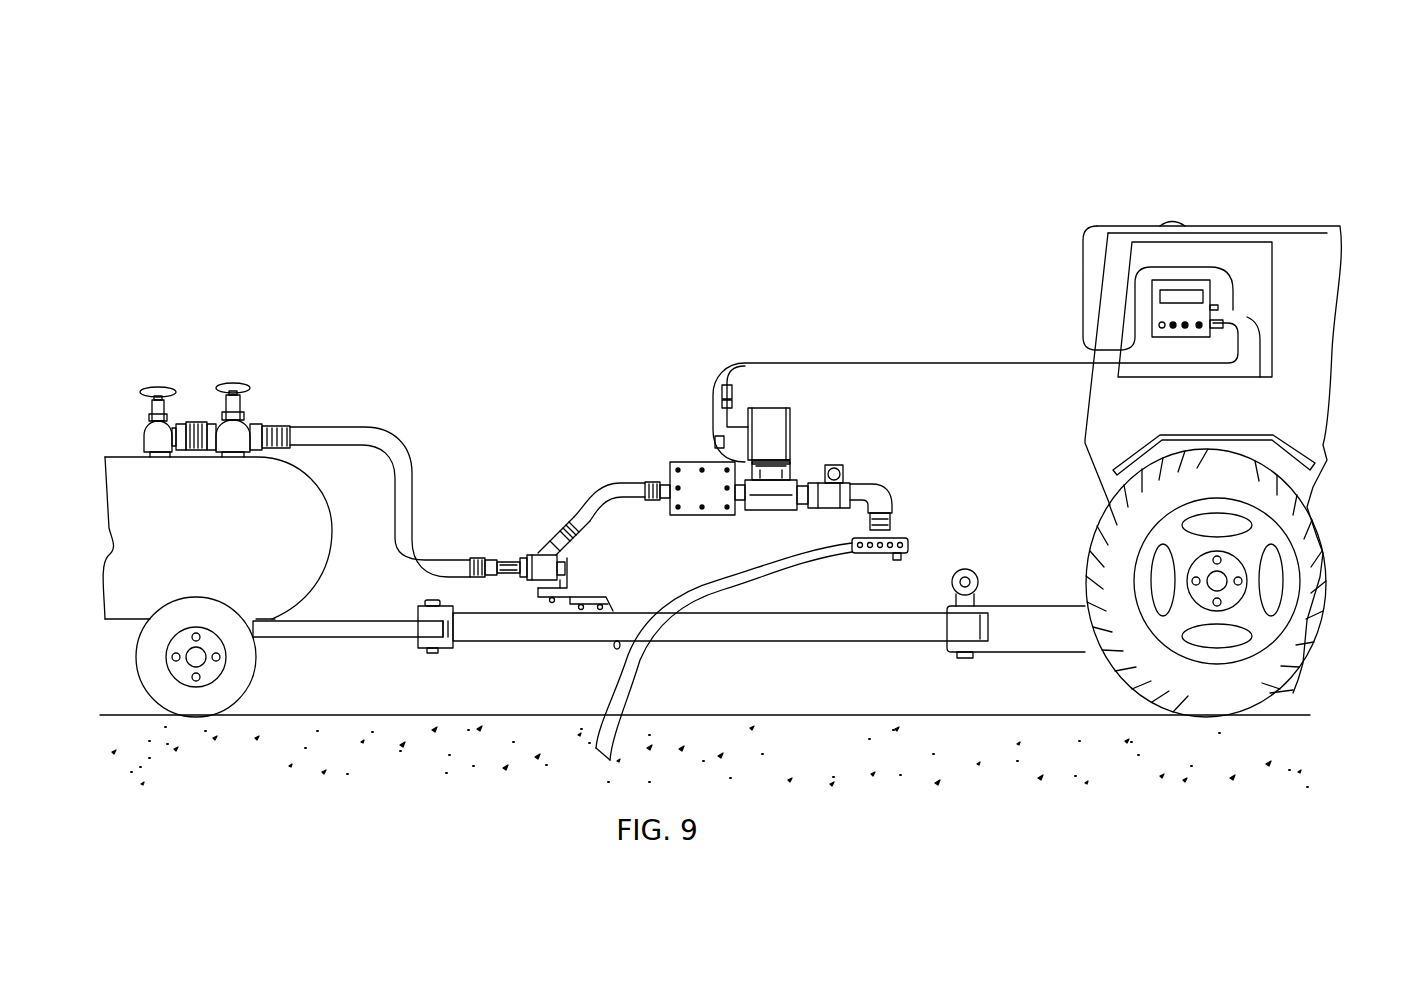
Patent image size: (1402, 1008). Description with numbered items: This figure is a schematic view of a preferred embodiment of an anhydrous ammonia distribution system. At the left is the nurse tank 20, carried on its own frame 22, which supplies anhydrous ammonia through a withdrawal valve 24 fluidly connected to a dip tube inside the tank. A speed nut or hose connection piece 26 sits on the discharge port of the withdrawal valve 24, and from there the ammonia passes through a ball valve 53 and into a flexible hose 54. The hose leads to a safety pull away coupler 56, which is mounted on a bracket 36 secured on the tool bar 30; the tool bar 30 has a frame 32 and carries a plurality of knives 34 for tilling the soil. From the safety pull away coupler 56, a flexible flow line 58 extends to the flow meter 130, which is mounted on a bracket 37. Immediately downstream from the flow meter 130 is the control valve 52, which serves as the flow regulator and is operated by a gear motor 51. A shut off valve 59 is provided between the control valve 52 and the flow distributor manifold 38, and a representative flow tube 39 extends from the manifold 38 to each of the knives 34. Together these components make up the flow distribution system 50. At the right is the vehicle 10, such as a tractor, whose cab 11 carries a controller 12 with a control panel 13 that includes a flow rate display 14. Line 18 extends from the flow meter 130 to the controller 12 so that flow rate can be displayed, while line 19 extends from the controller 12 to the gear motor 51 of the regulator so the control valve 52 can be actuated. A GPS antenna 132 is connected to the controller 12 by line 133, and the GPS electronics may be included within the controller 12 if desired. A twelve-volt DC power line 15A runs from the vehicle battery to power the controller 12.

The vehicle 10 is at (1085, 165).
The cab 11 is at (1100, 407).
The controller 12 is at (1253, 270).
The control panel 13 is at (1160, 312).
The flow rate display 14 is at (1160, 293).
The power line 15A is at (1248, 318).
The line 18 is at (712, 412).
The line 19 is at (732, 387).
The nurse tank 20 is at (135, 455).
The frame 22 is at (357, 627).
The withdrawal valve 24 is at (165, 436).
The hose connection piece 26 is at (193, 430).
The tool bar 30 is at (470, 668).
The frame 32 is at (505, 628).
The knife 34 is at (610, 684).
The bracket 36 is at (607, 603).
The bracket 37 is at (756, 482).
The flow distributor manifold 38 is at (888, 540).
The flow tube 39 is at (597, 702).
The flow distribution system 50 is at (580, 385).
The gear motor 51 is at (775, 420).
The control valve 52 is at (790, 478).
The ball valve 53 is at (238, 433).
The flexible hose 54 is at (353, 427).
The safety pull away coupler 56 is at (537, 565).
The flexible flow line 58 is at (607, 493).
The shut off valve 59 is at (838, 470).
The flow meter 130 is at (697, 480).
The GPS antenna 132 is at (1175, 223).
The line 133 is at (1080, 268).